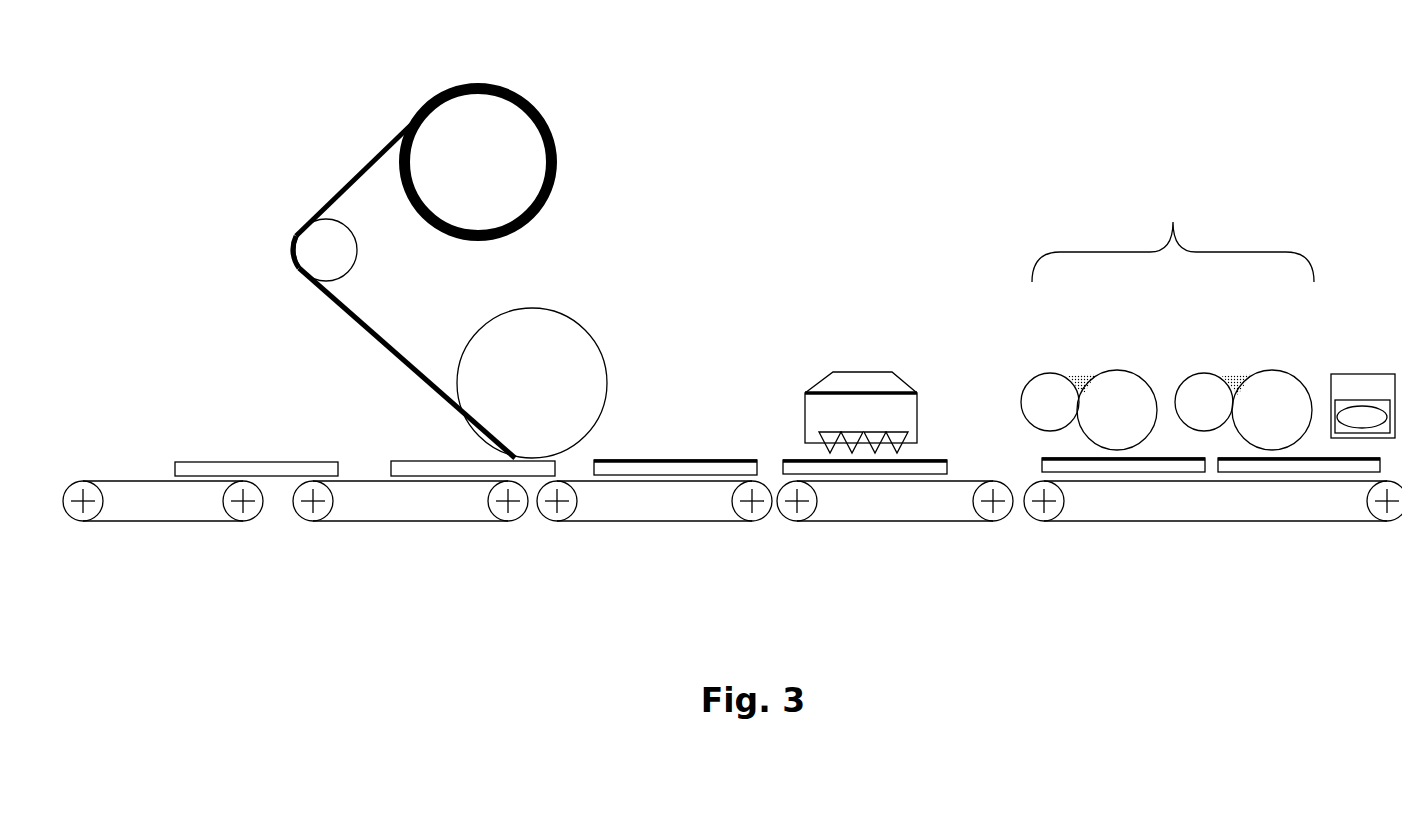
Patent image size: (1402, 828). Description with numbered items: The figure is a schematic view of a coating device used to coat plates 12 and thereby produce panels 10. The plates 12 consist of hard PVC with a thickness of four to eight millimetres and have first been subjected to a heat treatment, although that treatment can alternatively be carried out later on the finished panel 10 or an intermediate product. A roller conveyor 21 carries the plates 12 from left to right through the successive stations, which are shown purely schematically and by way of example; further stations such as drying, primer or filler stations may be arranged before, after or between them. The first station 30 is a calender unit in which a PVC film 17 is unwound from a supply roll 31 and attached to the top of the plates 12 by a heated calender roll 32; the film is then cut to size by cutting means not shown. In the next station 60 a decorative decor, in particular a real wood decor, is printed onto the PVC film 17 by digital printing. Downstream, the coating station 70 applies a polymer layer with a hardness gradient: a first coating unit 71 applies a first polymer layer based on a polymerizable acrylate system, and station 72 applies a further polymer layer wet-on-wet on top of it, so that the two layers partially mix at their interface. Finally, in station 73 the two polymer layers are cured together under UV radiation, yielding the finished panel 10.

The panel 10 is at (1337, 475).
The plate 12 is at (222, 453).
The PVC film 17 is at (350, 171).
The roller conveyor 21 is at (134, 510).
The first station 30 is at (489, 249).
The supply roll 31 is at (548, 116).
The heated calender roll 32 is at (612, 354).
The station 60 is at (862, 361).
The coating station 70 is at (1167, 317).
The first coating unit 71 is at (1097, 358).
The station 72 is at (1245, 355).
The station 73 is at (1355, 392).